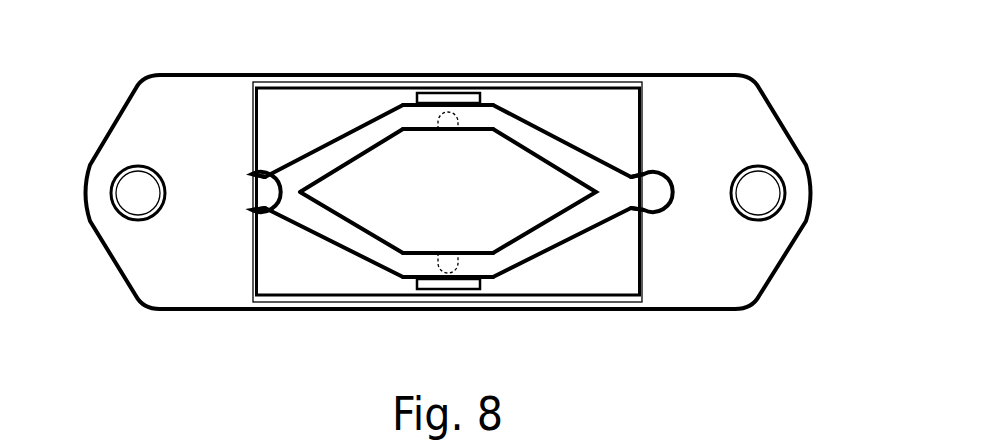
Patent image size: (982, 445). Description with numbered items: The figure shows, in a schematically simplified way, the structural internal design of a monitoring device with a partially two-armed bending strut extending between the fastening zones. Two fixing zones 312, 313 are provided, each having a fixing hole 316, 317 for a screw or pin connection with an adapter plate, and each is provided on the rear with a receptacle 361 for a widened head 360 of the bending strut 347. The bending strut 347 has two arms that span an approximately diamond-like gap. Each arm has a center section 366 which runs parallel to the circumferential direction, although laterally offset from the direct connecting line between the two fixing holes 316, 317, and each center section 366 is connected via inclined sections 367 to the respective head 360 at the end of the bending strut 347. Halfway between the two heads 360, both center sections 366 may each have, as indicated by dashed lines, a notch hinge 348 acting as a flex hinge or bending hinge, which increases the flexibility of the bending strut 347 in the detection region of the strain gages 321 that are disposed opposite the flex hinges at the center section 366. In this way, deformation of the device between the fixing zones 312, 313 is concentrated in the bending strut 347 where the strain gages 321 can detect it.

The fixing zone 312 is at (132, 142).
The fixing zone 313 is at (787, 215).
The fixing hole 316 is at (128, 192).
The fixing hole 317 is at (757, 193).
The strain gage 321 is at (443, 95).
The bending strut 347 is at (448, 200).
The notch hinge 348 is at (450, 260).
The head 360 is at (243, 188).
The receptacle 361 is at (233, 208).
The center section 366 is at (478, 267).
The inclined section 367 is at (342, 150).